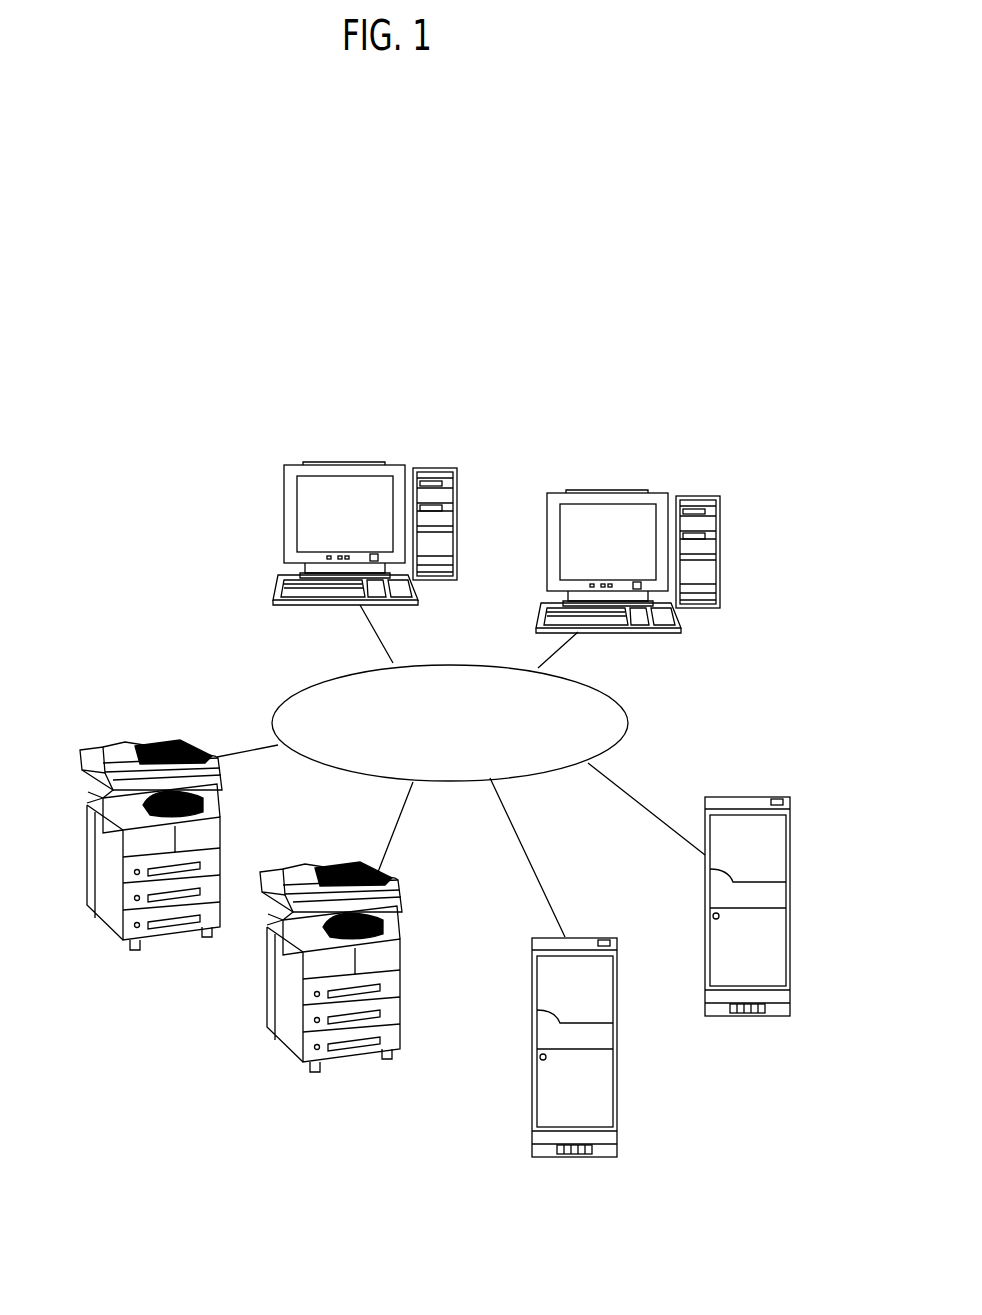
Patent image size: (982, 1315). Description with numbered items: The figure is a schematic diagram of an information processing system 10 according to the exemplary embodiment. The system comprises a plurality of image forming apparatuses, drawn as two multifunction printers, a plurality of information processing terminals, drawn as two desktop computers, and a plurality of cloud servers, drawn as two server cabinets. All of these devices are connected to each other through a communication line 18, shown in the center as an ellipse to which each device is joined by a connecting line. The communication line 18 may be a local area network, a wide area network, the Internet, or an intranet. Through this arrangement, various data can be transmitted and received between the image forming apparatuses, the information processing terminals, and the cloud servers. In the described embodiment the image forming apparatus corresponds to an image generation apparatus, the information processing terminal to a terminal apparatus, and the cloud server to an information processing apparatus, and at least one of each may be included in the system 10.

The information processing system 10 is at (557, 399).
The communication line 18 is at (630, 713).